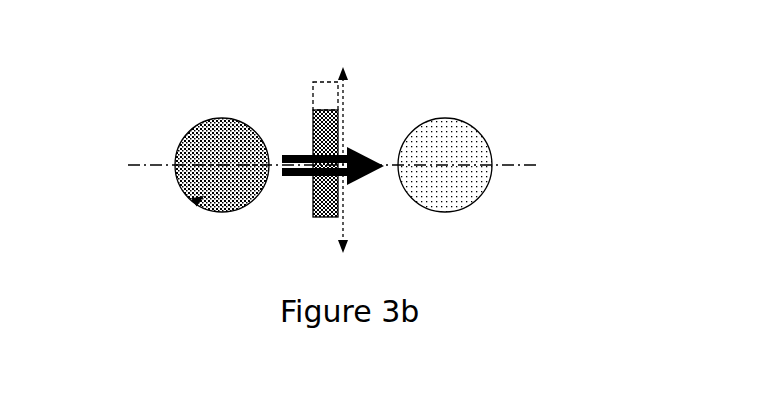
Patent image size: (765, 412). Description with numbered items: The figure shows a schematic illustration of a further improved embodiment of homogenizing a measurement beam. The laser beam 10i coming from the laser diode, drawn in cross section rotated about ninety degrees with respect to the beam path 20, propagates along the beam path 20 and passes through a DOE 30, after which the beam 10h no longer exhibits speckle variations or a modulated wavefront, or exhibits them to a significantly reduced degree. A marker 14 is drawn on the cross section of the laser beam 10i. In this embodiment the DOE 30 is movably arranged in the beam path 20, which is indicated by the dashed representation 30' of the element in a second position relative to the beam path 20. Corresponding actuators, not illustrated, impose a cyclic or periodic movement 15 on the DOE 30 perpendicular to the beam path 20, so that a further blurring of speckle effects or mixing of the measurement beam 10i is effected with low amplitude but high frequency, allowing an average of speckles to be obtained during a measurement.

The laser beam 10i is at (190, 137).
The polarization direction marker 14 is at (196, 201).
The DOE 30 is at (242, 150).
The dashed representation of the DOE in a second position 30' is at (242, 74).
The cyclic or periodic movement 15 is at (345, 128).
The beam path 20 is at (505, 165).
The homogenized beam 10h is at (472, 168).